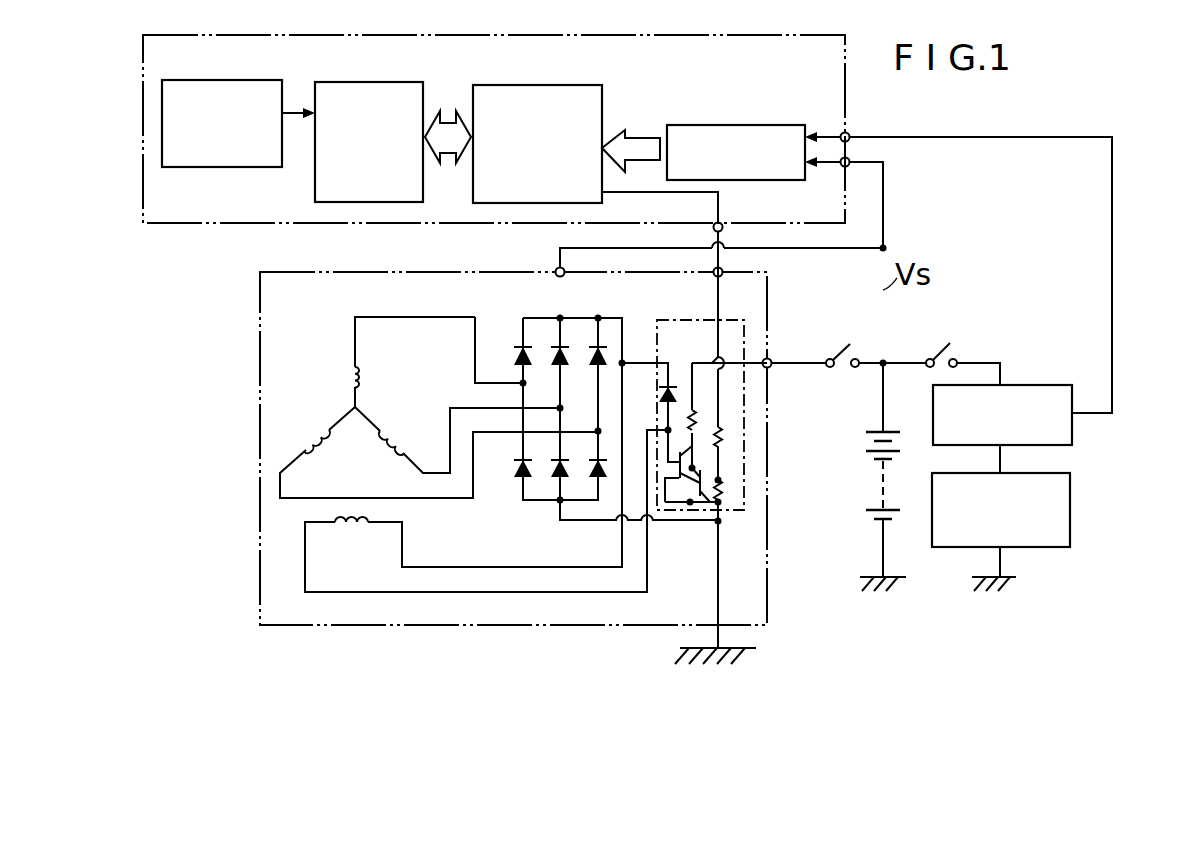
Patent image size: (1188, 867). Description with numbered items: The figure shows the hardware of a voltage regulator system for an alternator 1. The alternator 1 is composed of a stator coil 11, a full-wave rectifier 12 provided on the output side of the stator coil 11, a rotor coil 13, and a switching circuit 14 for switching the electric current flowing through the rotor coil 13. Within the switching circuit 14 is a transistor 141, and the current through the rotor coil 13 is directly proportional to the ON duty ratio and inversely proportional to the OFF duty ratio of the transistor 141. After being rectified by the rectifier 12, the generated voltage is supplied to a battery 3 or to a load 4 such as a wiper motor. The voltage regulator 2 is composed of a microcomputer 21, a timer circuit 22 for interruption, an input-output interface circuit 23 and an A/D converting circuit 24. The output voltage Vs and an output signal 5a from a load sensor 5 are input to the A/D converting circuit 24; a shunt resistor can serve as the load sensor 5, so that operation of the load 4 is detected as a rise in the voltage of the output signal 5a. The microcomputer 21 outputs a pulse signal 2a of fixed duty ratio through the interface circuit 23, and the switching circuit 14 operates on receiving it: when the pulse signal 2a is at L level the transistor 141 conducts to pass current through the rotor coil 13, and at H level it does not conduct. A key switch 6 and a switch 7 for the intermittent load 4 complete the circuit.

The alternator 1 is at (486, 627).
The stator coil 11 is at (346, 378).
The full-wave rectifier 12 is at (520, 345).
The rotor coil 13 is at (358, 526).
The switching circuit 14 is at (680, 318).
The transistor 141 is at (674, 484).
The voltage regulator 2 is at (143, 90).
The pulse signal 2a is at (724, 228).
The microcomputer 21 is at (427, 93).
The timer circuit for interruption 22 is at (251, 167).
The input-output interface circuit 23 is at (603, 100).
The A/D converting circuit 24 is at (746, 118).
The battery 3 is at (866, 448).
The load 4 is at (1072, 490).
The load sensor 5 is at (1071, 385).
The output signal 5a is at (1112, 293).
The key switch 6 is at (849, 358).
The switch for the intermittent load 7 is at (950, 353).